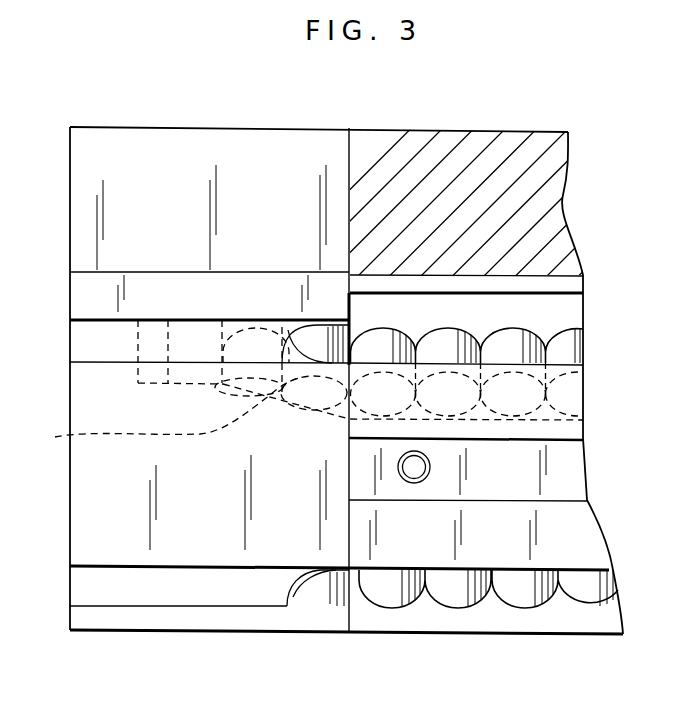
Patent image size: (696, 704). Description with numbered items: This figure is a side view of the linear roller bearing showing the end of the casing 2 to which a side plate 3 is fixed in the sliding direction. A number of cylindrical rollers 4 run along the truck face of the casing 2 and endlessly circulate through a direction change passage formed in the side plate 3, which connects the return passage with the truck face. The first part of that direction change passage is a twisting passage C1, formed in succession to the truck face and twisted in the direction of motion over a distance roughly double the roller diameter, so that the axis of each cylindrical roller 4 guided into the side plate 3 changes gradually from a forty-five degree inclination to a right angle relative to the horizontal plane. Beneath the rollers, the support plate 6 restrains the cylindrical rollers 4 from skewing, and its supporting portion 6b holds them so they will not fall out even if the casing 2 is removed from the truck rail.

The side plate 3 is at (222, 147).
The casing 2 is at (468, 147).
The cylindrical rollers 4 is at (525, 330).
The supporting portion 6b is at (553, 372).
The support plate 6 is at (568, 466).
The twisting passage C1 is at (166, 412).